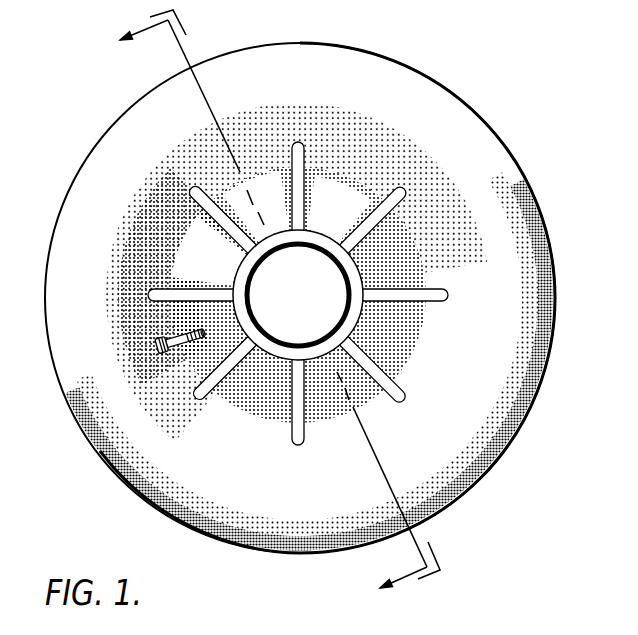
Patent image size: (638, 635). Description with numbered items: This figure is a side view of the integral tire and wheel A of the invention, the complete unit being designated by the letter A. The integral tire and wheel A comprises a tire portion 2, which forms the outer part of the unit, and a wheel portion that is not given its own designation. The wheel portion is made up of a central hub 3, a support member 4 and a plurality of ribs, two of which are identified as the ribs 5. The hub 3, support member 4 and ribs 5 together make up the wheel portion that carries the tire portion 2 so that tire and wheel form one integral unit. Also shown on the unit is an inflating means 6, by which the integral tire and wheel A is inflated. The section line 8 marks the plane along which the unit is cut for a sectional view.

The integral tire and wheel A is at (468, 104).
The tire portion 2 is at (505, 173).
The hub 3 is at (318, 240).
The support member 4 is at (213, 258).
The ribs 5 is at (372, 235).
The inflating means 6 is at (202, 343).
The section line 8- 8 is at (263, 312).